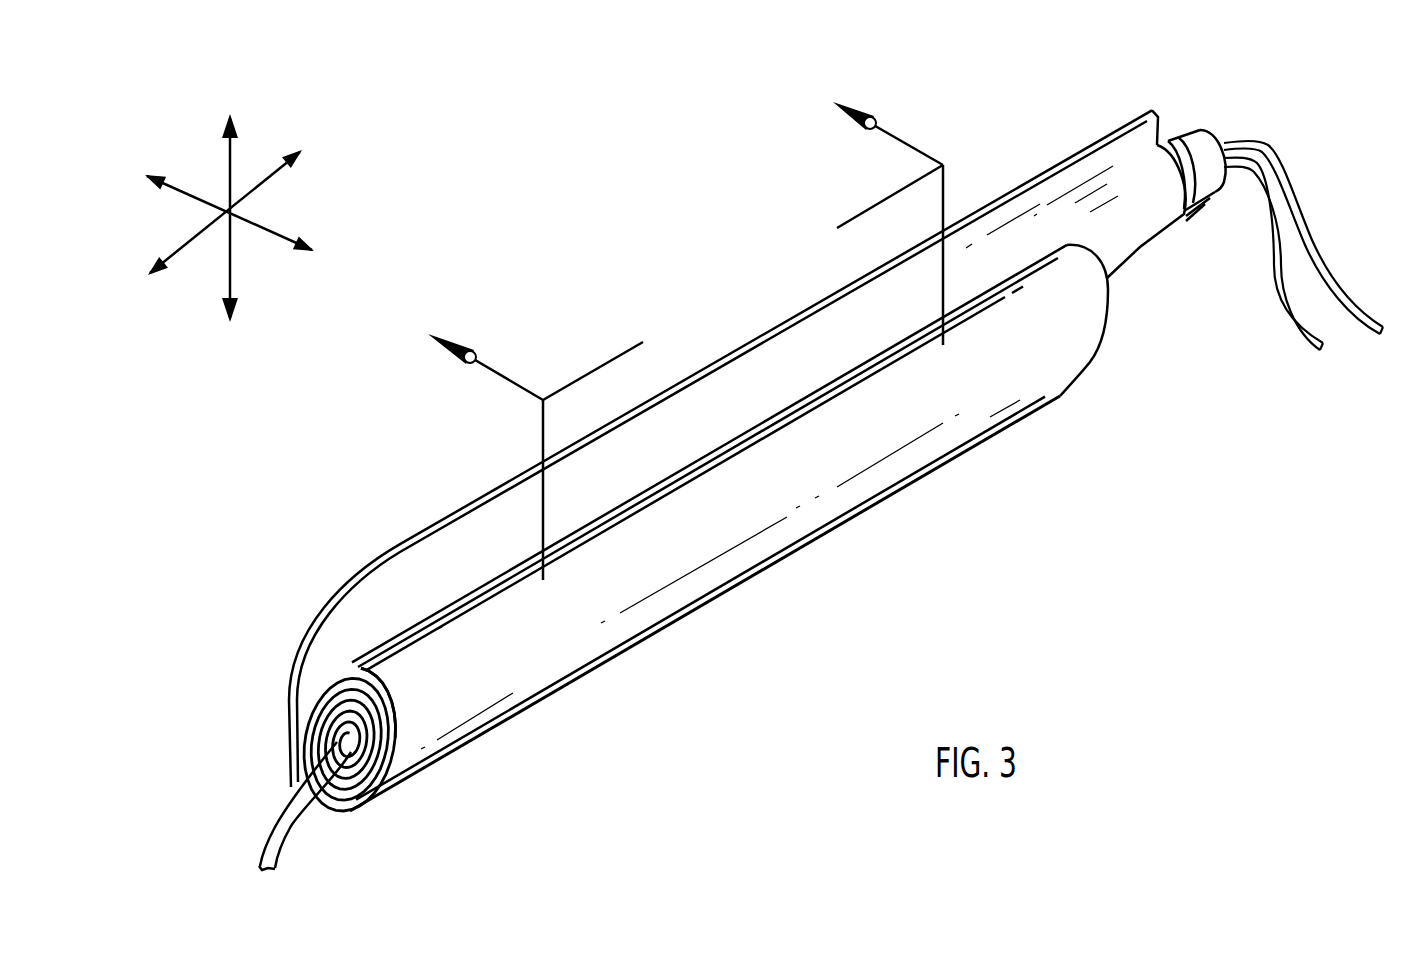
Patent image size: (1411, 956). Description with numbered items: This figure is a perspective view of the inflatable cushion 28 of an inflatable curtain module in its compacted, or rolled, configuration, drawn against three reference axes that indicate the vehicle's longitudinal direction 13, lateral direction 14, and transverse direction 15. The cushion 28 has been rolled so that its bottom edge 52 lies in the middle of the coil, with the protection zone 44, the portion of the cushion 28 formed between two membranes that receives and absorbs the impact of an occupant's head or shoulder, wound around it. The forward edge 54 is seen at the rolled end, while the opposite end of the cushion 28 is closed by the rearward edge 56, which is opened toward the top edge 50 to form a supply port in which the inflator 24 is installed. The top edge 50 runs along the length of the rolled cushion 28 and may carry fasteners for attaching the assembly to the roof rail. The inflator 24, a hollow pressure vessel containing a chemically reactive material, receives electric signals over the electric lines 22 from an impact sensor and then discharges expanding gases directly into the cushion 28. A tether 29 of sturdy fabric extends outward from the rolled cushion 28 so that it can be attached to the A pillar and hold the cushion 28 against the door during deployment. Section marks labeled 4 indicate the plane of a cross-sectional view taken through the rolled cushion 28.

The section line of FIG. 4 is at (686, 341).
The longitudinal direction 13 is at (183, 252).
The lateral direction 14 is at (275, 237).
The transverse direction 15 is at (228, 150).
The electric lines 22 is at (1293, 181).
The inflator 24 is at (1203, 145).
The cushion 28 is at (688, 460).
The tether 29 is at (273, 808).
The protection zone 44 is at (463, 693).
The top edge 50 is at (783, 362).
The bottom edge 52 is at (345, 738).
The forward edge 54 is at (343, 672).
The rearward edge 56 is at (1103, 353).